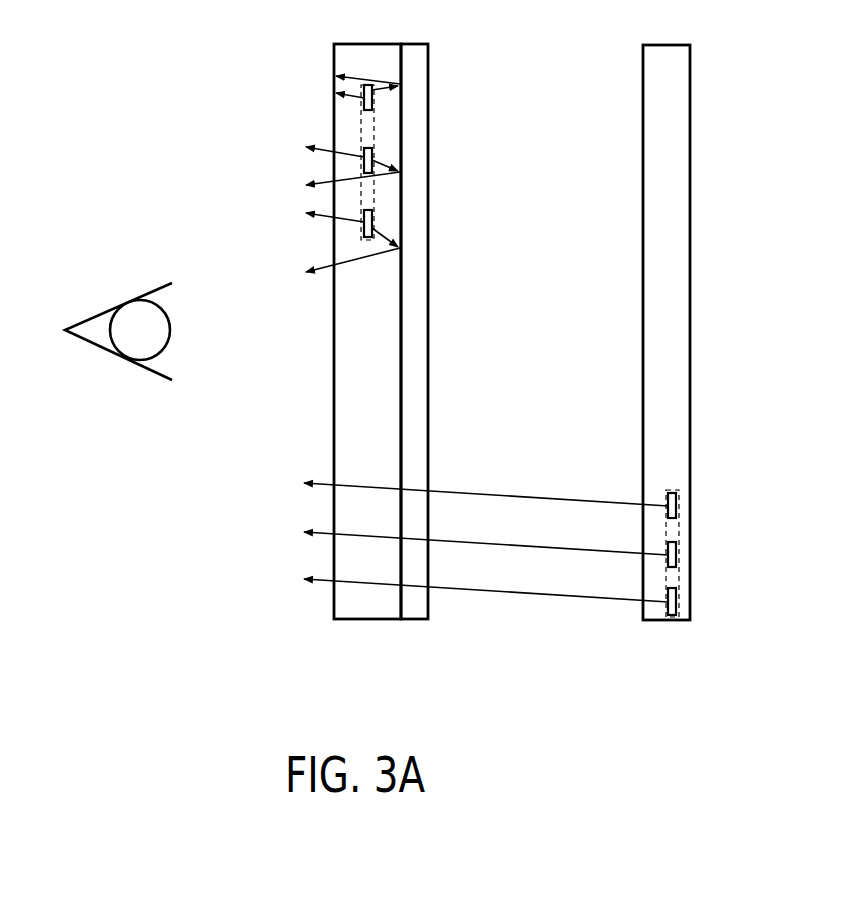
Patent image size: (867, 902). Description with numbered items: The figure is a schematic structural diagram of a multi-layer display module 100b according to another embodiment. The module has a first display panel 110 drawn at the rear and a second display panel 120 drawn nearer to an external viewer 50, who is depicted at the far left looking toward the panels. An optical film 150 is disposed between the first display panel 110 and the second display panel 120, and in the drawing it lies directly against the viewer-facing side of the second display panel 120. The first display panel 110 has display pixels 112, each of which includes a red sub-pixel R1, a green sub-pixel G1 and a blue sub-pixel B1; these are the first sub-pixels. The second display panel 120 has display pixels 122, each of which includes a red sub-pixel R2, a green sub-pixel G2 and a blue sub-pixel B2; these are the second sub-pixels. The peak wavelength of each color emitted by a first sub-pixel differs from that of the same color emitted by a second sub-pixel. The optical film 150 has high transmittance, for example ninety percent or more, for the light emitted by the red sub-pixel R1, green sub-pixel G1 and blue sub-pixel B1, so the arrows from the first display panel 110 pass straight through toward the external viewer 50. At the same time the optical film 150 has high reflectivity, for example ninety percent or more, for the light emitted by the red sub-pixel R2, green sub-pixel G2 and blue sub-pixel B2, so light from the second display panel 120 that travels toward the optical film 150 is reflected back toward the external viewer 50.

The multi-layer display module 100b is at (757, 695).
The first display panel 110 is at (667, 70).
The display pixel 112 is at (671, 491).
The second display panel 120 is at (361, 62).
The display pixel 122 is at (360, 135).
The optical film 150 is at (417, 70).
The external viewer 50 is at (135, 313).
The red sub-pixel R1 is at (678, 501).
The green sub-pixel G1 is at (678, 550).
The blue sub-pixel B1 is at (678, 598).
The red sub-pixel R2 is at (373, 104).
The green sub-pixel G2 is at (373, 152).
The blue sub-pixel B2 is at (373, 218).